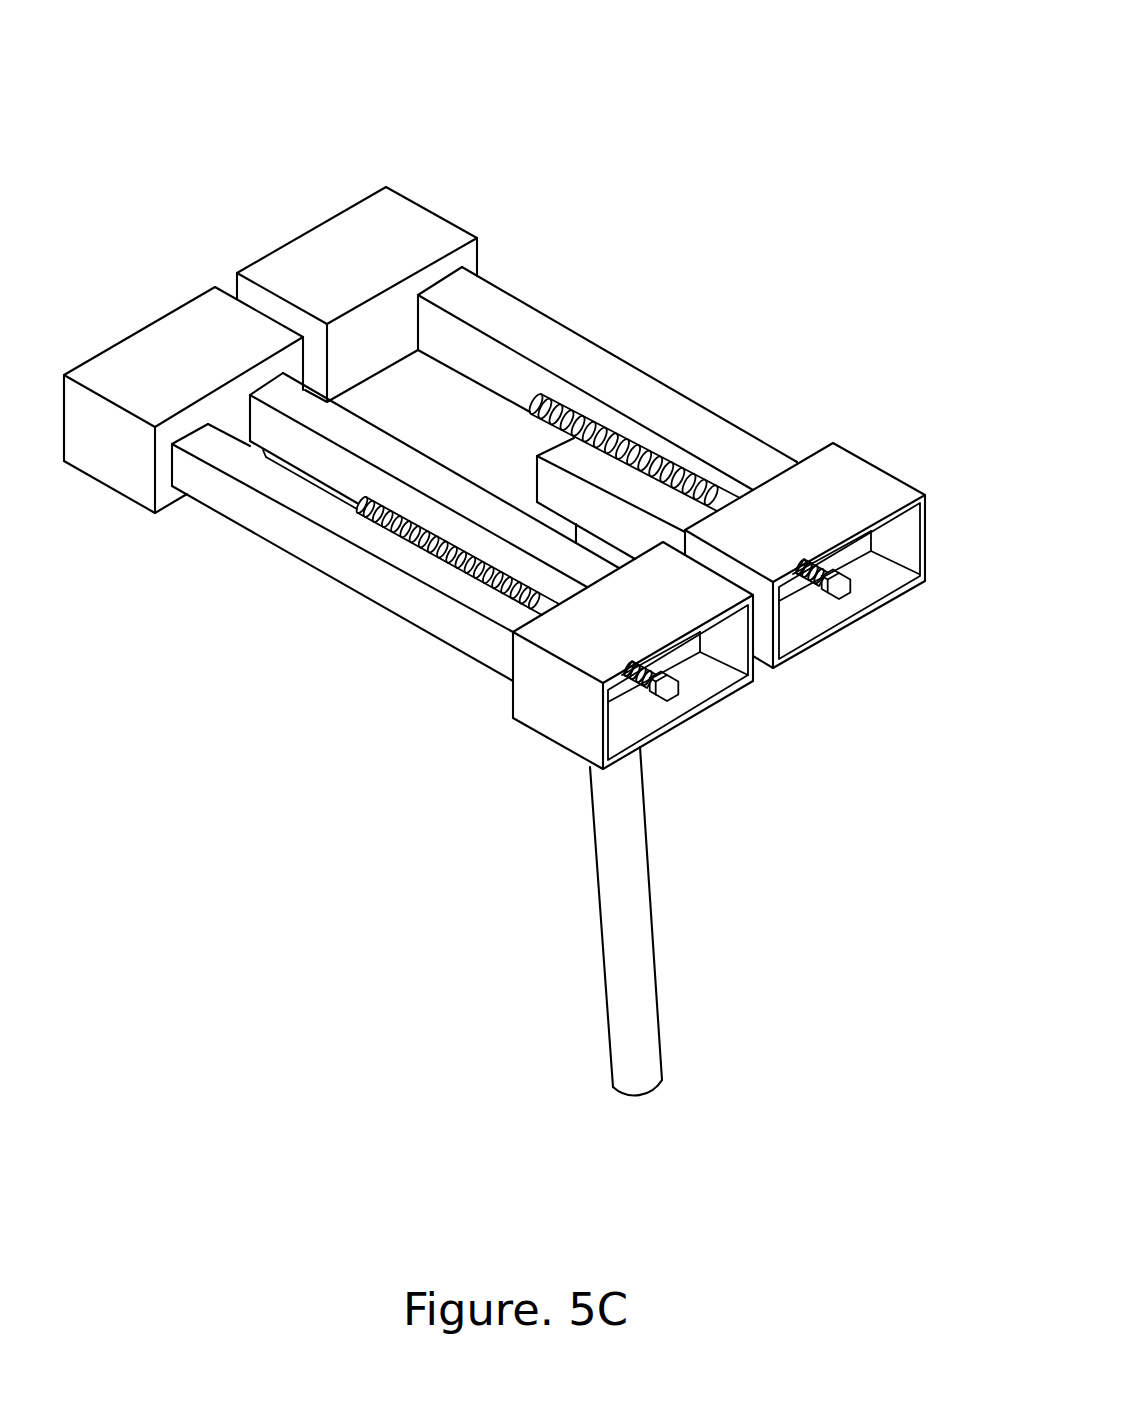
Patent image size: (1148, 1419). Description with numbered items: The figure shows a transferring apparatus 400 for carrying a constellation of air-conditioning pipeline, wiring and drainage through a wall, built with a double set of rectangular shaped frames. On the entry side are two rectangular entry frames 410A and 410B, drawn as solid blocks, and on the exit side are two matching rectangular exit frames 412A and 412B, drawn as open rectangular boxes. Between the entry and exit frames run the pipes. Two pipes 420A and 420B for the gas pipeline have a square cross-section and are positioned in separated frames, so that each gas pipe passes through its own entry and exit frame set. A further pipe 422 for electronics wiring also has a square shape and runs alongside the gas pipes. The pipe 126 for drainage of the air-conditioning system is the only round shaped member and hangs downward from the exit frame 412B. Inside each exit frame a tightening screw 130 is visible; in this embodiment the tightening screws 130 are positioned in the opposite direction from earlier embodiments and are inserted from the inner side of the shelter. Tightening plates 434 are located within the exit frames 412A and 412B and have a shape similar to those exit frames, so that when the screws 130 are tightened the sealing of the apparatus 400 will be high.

The transferring apparatus 400 is at (790, 92).
The entry frame 410A is at (430, 222).
The entry frame 410B is at (168, 337).
The pipe for gas pipeline 420A is at (248, 513).
The pipe for gas pipeline 420B is at (538, 312).
The pipe for electronics wiring 422 is at (332, 472).
The exit frame 412A is at (872, 478).
The exit frame 412B is at (560, 728).
The tightening plate 434 is at (682, 657).
The tightening screw 130 is at (673, 693).
The pipe for drainage 126 is at (617, 922).